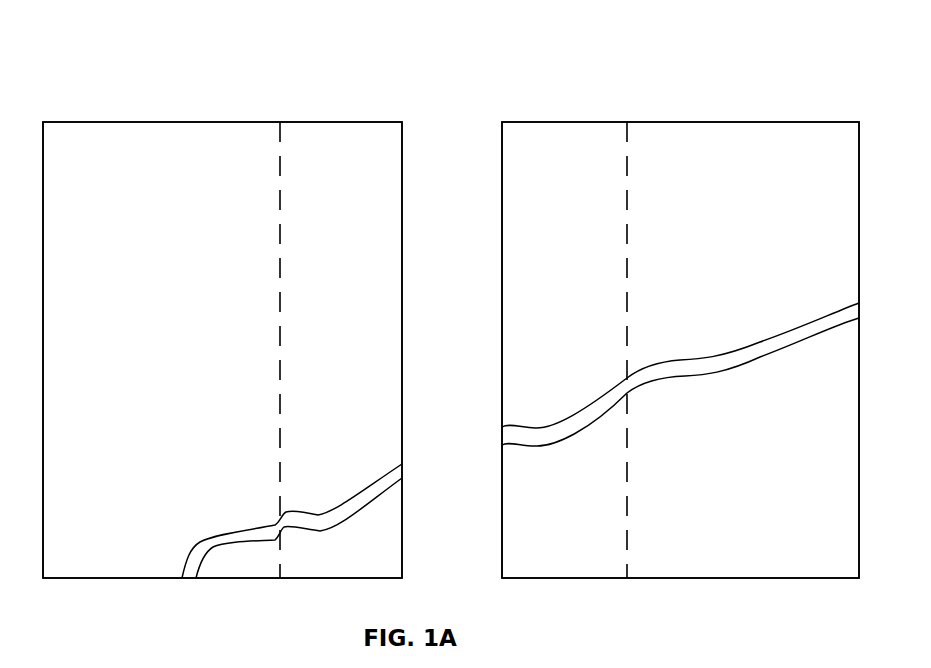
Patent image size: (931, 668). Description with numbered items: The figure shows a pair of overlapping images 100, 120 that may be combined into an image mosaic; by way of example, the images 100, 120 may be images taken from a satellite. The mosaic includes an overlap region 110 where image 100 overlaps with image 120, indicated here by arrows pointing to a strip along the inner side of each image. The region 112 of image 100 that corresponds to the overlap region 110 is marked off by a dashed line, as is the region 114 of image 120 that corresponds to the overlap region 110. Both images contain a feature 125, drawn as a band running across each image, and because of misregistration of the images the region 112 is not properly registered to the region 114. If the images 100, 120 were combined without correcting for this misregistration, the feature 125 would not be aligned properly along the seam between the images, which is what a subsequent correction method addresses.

The image 100 is at (222, 350).
The overlap region 110 is at (554, 105).
The region of image 100 112 is at (322, 147).
The region of image 120 114 is at (586, 150).
The image 120 is at (680, 350).
The feature 125 is at (310, 521).